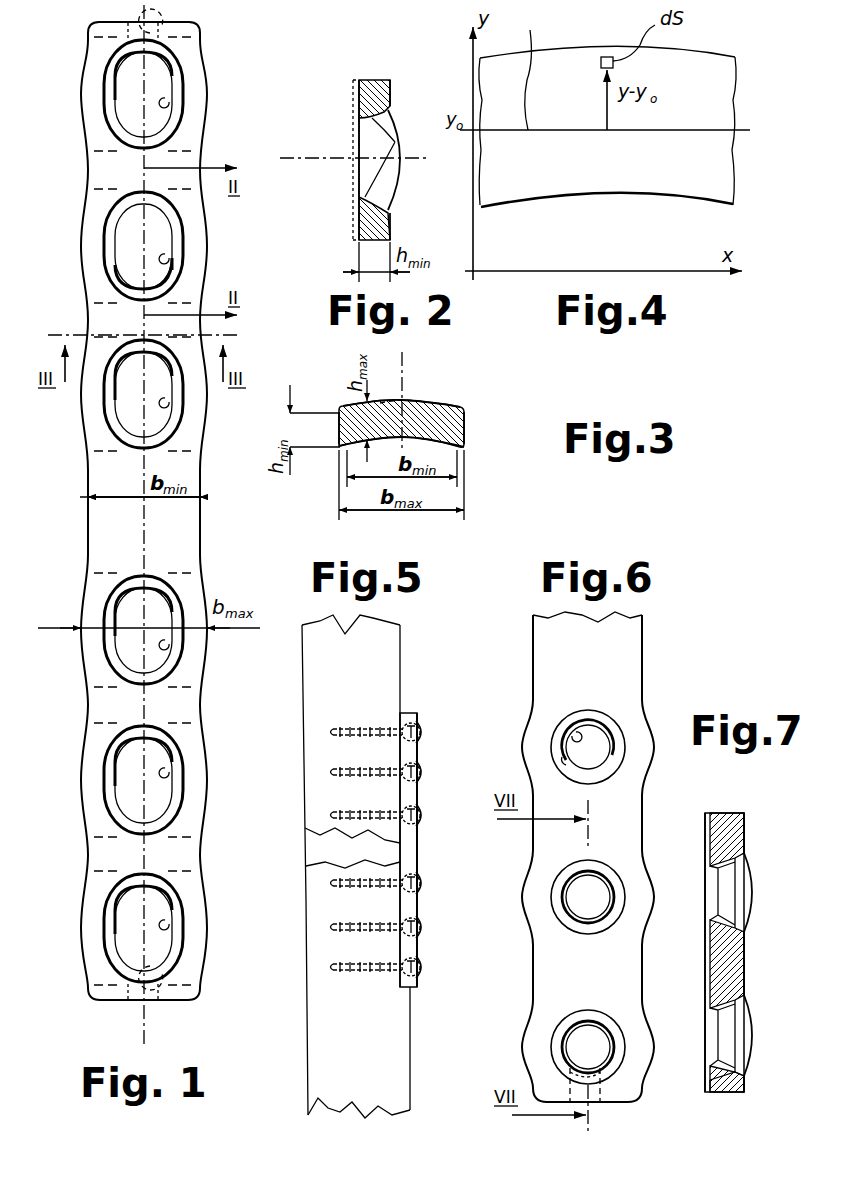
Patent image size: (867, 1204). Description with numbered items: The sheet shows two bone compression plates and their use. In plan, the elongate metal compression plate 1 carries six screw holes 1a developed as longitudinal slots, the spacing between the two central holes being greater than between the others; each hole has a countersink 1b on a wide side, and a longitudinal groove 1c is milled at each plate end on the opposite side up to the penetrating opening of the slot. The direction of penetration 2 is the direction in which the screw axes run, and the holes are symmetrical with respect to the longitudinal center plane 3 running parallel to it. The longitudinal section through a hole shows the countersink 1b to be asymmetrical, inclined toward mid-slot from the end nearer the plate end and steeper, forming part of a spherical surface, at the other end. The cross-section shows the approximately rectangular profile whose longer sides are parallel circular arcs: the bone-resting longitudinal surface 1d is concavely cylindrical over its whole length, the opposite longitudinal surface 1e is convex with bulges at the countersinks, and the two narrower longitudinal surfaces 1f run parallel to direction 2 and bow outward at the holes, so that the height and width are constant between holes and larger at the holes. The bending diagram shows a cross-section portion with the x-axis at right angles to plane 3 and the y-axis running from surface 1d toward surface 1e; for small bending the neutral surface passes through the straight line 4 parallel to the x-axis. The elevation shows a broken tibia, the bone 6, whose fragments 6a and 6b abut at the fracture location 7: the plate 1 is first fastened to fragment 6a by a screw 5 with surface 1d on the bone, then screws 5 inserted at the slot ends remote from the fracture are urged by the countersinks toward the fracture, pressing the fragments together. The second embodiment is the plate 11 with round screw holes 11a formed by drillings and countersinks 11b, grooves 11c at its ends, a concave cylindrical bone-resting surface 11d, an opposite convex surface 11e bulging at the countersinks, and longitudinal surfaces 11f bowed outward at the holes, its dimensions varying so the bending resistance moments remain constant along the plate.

In FIG. 1, the compression plate 1 is at (187, 553).
In FIG. 2, the compression plate 1 is at (372, 82).
In FIG. 3, the compression plate 1 is at (365, 404).
In FIG. 5, the compression plate 1 is at (418, 836).
In FIG. 1, the screw holes 1a is at (166, 100).
In FIG. 2, the screw holes 1a is at (355, 125).
In FIG. 3, the screw holes 1a is at (432, 401).
In FIG. 5, the screw holes 1a is at (420, 740).
In FIG. 1, the countersink 1b is at (170, 127).
In FIG. 2, the countersink 1b is at (403, 140).
In FIG. 1, the longitudinal groove 1c is at (152, 24).
In FIG. 2, the longitudinal surface 1d is at (357, 220).
In FIG. 3, the longitudinal surface 1d is at (440, 447).
In FIG. 4, the longitudinal surface 1d is at (540, 198).
In FIG. 5, the longitudinal surface 1d is at (325, 866).
In FIG. 2, the longitudinal surface 1e is at (392, 108).
In FIG. 3, the longitudinal surface 1e is at (455, 401).
In FIG. 4, the longitudinal surface 1e is at (560, 46).
In FIG. 5, the longitudinal surface 1e is at (420, 905).
In FIG. 1, the longitudinal surfaces 1f is at (87, 476).
In FIG. 3, the longitudinal surfaces 1f is at (340, 428).
In FIG. 2, the direction of penetration 2 is at (345, 156).
In FIG. 1, the longitudinal center plane 3 is at (141, 1022).
In FIG. 3, the longitudinal center plane 3 is at (402, 368).
In FIG. 4, the straight line 4 is at (529, 68).
In FIG. 5, the screws 5 is at (330, 770).
In FIG. 5, the bone 6 is at (392, 688).
In FIG. 5, the bone fragment 6a is at (330, 1060).
In FIG. 5, the bone fragment 6b is at (318, 680).
In FIG. 5, the fracture location 7 is at (320, 830).
In FIG. 6, the plate 11 is at (620, 641).
In FIG. 7, the plate 11 is at (723, 813).
In FIG. 6, the screw holes 11a is at (575, 733).
In FIG. 7, the screw holes 11a is at (712, 870).
In FIG. 6, the countersinks 11b is at (560, 748).
In FIG. 7, the countersinks 11b is at (716, 910).
In FIG. 6, the grooves 11c is at (596, 1100).
In FIG. 7, the grooves 11c is at (705, 1085).
In FIG. 7, the surface 11d is at (706, 832).
In FIG. 7, the surface 11e is at (746, 827).
In FIG. 6, the longitudinal surfaces 11f is at (533, 667).